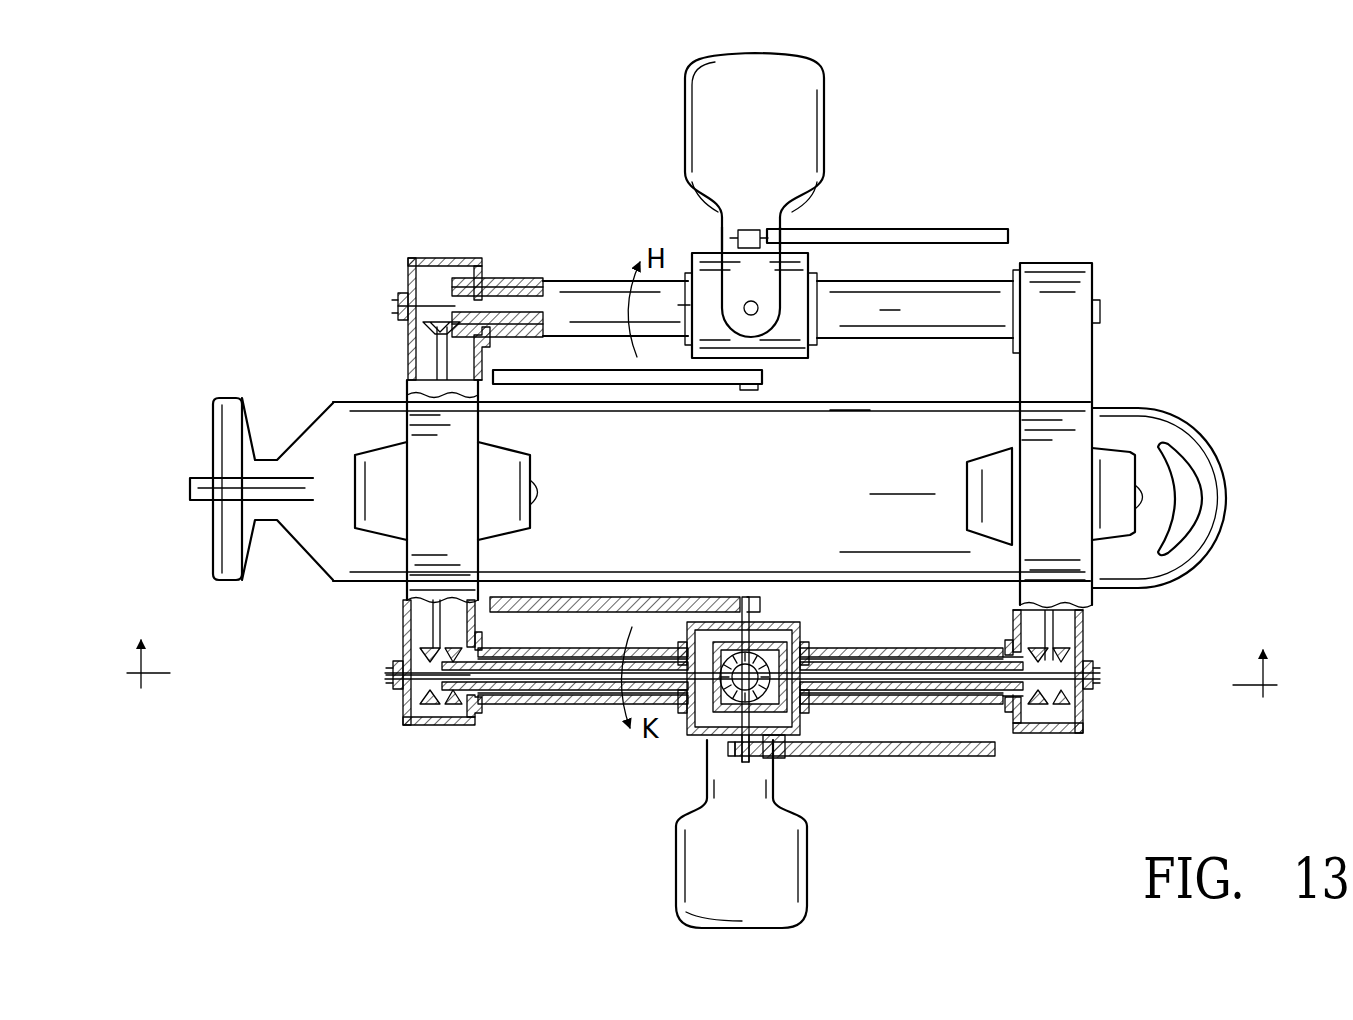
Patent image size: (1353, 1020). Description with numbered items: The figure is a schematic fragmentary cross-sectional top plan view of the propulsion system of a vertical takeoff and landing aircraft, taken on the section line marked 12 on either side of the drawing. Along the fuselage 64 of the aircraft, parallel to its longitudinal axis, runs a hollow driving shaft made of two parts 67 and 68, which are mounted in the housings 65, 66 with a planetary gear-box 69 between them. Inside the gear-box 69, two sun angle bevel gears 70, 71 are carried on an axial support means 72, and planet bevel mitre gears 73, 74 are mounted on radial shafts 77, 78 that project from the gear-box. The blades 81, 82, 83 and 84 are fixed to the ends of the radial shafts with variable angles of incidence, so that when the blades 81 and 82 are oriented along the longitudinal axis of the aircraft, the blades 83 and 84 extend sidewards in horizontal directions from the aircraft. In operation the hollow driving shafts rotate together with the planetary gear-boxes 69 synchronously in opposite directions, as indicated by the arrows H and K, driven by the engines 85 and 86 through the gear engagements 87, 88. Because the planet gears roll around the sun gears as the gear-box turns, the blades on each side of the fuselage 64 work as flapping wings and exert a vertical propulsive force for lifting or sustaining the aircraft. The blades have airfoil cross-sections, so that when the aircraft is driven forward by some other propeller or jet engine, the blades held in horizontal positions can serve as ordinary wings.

The section line of FIG. 12 is at (703, 649).
The fuselage 64 is at (842, 410).
The housing 65 is at (515, 276).
The housing 66 is at (970, 697).
The driving shaft part 67 is at (588, 290).
The driving shaft part 68 is at (990, 292).
The planetary gear-box 69 is at (703, 262).
The sun angle bevel gear 70 is at (780, 712).
The sun angle bevel gear 71 is at (687, 717).
The axial support means 72 is at (412, 275).
The planet bevel mitre gear 73 is at (790, 625).
The planet bevel mitre gear 74 is at (783, 760).
The radial shaft 77 is at (745, 594).
The radial shaft 78 is at (742, 763).
The blade 81 is at (553, 383).
The blade 82 is at (905, 230).
The blade 83 is at (818, 172).
The blade 84 is at (797, 872).
The engine 85 is at (375, 460).
The engine 86 is at (1102, 460).
The gear engagement 87 is at (430, 326).
The gear engagement 88 is at (460, 282).